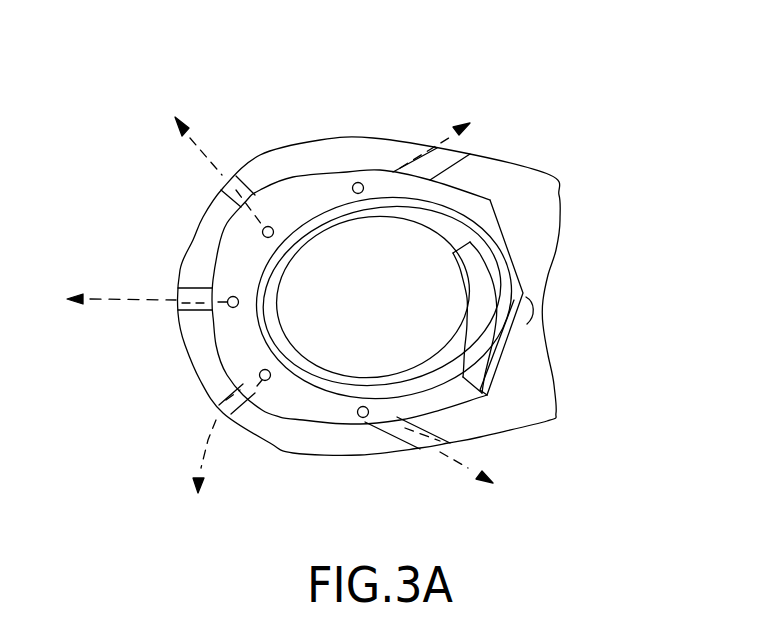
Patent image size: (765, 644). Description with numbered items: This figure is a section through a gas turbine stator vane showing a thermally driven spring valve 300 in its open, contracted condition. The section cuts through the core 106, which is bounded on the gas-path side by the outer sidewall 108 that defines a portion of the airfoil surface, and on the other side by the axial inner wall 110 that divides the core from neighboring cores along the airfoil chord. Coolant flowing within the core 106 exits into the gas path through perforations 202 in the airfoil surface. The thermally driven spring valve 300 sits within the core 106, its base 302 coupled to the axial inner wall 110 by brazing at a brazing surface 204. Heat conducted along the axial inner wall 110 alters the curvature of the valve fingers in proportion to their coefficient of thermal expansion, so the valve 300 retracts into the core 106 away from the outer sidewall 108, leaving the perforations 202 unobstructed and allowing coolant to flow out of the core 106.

The core 106 is at (364, 275).
The outer sidewall 108 is at (302, 160).
The axial inner wall 110 is at (528, 218).
The perforations 202 is at (153, 300).
The brazing surface 204 is at (512, 350).
The thermally driven spring valve 300 is at (307, 377).
The base 302 is at (500, 338).